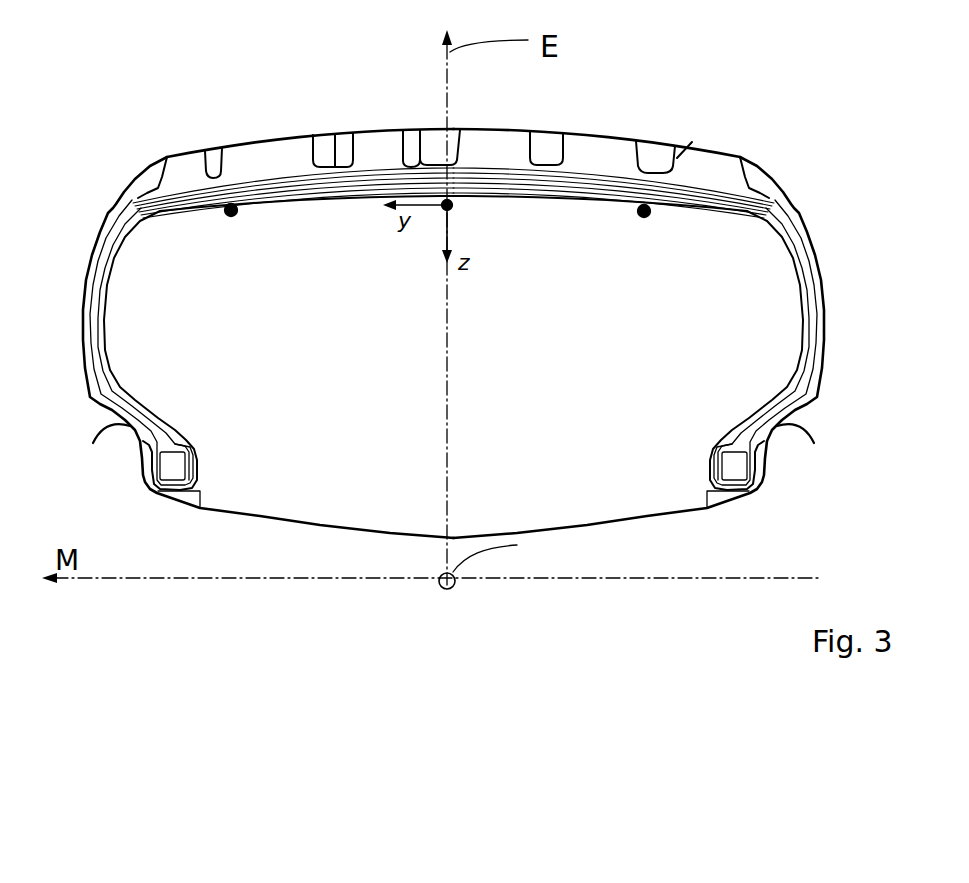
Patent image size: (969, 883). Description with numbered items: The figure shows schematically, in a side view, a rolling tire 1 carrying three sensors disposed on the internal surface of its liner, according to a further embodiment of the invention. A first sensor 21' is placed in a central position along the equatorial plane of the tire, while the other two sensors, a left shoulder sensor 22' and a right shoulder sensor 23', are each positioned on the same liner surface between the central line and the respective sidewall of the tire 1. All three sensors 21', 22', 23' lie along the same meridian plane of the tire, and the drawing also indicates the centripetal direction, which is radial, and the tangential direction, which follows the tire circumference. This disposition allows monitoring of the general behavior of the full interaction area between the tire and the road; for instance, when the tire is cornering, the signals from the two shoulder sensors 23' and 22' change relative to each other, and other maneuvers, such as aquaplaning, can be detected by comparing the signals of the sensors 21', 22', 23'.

The tire 1 is at (73, 298).
The first sensor 21' is at (400, 131).
The left shoulder sensor 22' is at (206, 152).
The right shoulder sensor 23' is at (666, 156).